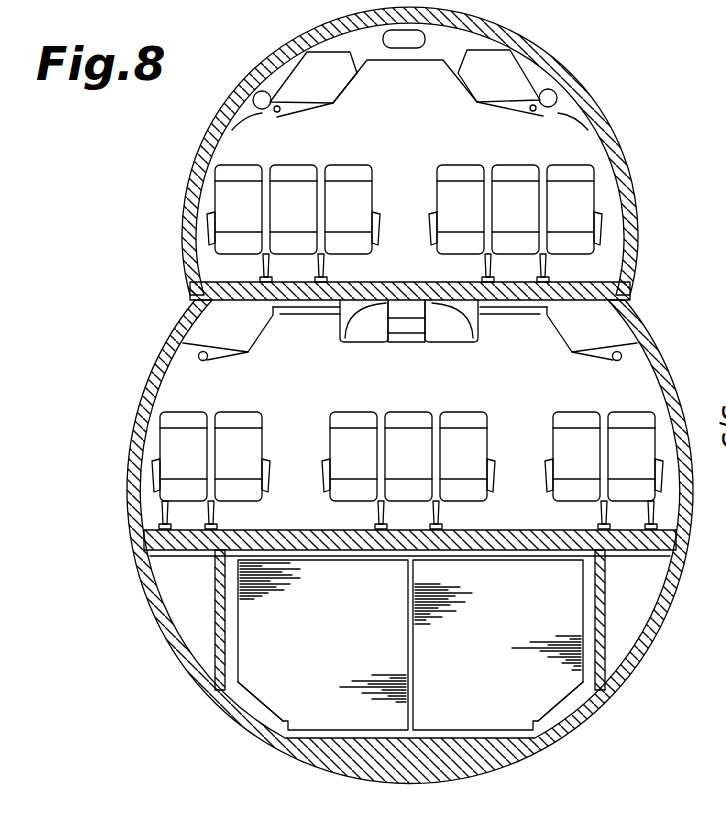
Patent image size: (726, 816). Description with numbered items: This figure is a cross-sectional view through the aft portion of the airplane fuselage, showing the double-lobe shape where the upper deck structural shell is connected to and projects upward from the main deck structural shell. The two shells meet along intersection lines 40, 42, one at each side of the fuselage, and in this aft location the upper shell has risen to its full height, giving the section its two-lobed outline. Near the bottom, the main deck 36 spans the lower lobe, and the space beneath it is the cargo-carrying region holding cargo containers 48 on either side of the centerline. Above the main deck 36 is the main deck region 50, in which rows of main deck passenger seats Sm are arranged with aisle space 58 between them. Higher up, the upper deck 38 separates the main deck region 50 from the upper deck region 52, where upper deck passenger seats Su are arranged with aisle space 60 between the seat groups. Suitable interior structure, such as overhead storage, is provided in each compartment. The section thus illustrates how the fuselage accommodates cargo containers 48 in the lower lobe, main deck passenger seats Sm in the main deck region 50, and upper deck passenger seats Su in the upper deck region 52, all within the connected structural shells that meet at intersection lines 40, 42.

The main deck 36 is at (341, 555).
The upper deck 38 is at (308, 300).
The intersection line 40 is at (186, 293).
The intersection line 42 is at (622, 297).
The cargo containers 48 is at (280, 690).
The main deck region 50 is at (608, 378).
The upper deck region 52 is at (600, 137).
The aisle space 58 is at (296, 498).
The aisle space 60 is at (400, 183).
The upper deck passenger seats Su is at (345, 165).
The main deck passenger seats Sm is at (185, 412).